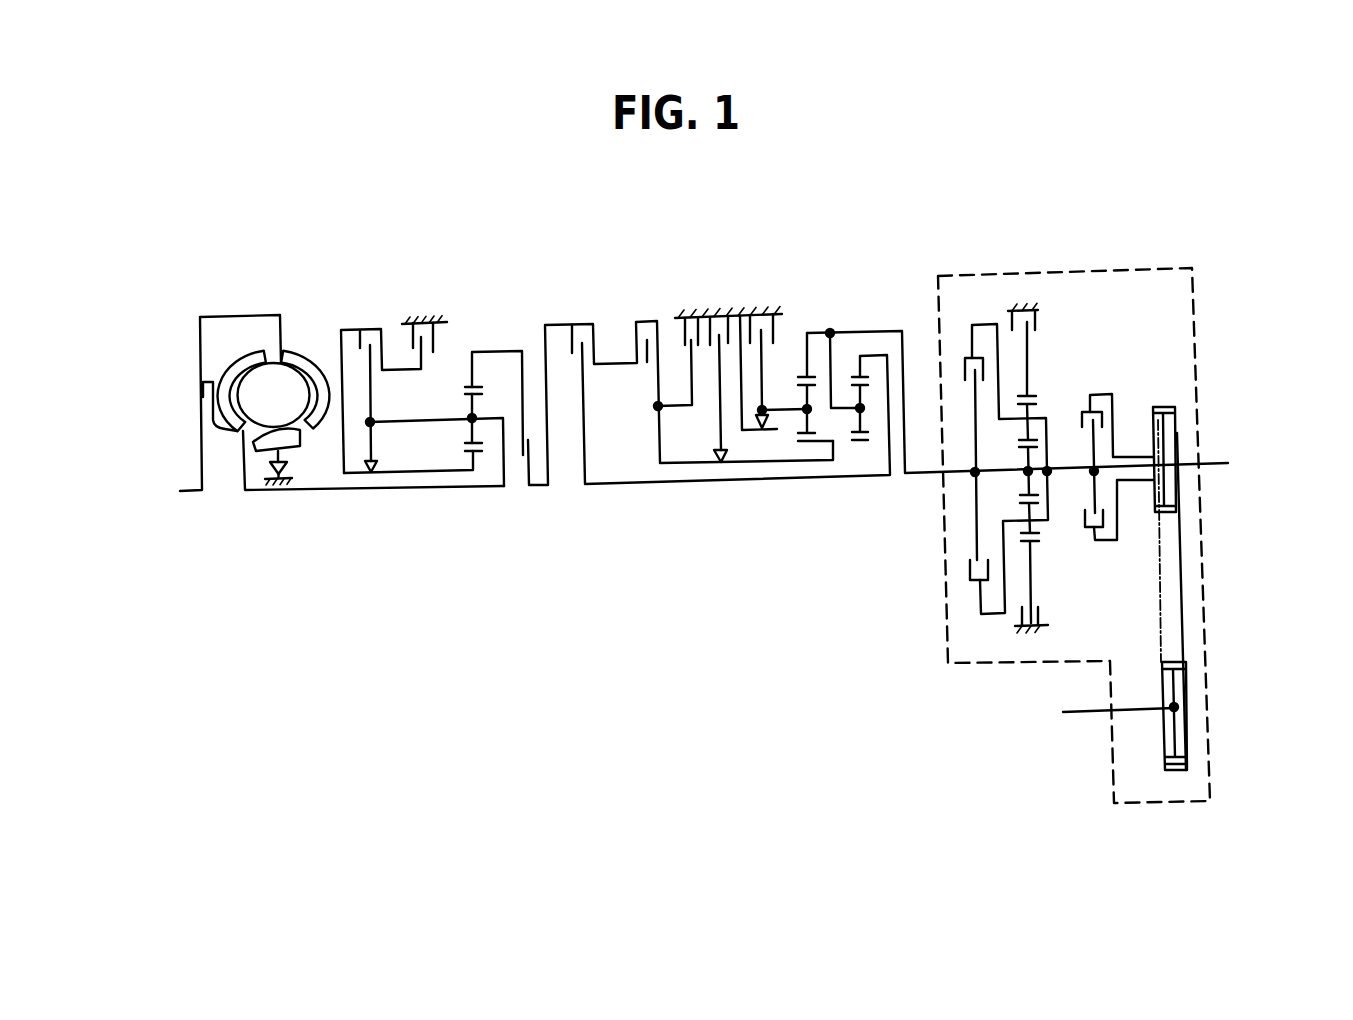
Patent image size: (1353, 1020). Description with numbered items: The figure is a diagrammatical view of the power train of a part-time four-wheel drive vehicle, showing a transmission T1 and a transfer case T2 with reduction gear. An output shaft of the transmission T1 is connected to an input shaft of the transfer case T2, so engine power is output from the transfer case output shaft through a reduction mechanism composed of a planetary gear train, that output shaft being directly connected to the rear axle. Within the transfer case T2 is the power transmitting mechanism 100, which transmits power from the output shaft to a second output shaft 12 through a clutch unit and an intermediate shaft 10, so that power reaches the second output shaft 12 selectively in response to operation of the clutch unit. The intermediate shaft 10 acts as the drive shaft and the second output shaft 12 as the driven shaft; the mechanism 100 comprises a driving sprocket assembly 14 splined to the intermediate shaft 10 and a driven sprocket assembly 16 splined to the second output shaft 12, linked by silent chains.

The power transmitting mechanism 100 is at (1204, 580).
The transmission T1 is at (597, 305).
The transfer case T2 is at (1048, 273).
The intermediate shaft 10 is at (1132, 487).
The second output shaft 12 is at (1077, 715).
The driving sprocket assembly 14 is at (1178, 498).
The driven sprocket assembly 16 is at (1176, 676).